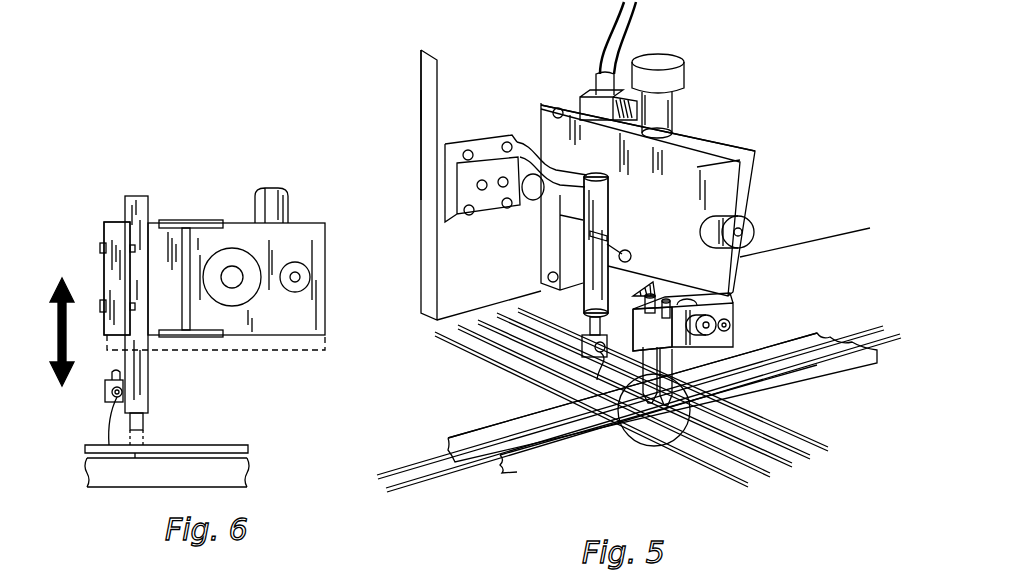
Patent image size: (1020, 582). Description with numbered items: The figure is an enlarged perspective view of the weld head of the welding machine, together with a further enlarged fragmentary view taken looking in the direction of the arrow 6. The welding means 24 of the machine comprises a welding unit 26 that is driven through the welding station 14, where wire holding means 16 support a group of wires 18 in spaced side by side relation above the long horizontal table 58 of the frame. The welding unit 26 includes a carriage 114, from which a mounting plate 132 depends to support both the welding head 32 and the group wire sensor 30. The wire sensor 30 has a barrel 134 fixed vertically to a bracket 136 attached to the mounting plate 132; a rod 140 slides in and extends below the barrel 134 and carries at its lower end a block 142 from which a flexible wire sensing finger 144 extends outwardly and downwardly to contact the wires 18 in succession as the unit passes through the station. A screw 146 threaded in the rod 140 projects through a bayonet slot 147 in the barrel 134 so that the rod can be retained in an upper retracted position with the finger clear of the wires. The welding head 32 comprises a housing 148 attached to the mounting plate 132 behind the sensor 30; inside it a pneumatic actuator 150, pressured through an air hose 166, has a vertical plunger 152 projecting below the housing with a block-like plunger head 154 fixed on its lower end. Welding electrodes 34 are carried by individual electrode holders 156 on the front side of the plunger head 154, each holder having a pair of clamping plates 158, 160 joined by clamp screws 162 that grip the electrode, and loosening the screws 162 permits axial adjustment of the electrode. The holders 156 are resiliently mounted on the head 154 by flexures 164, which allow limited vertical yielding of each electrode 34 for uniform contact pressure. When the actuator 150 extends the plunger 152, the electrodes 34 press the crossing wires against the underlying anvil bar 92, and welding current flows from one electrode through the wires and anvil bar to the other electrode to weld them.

In FIG. 5, the arrow 6 is at (722, 366).
In FIG. 5, the welding station 14 is at (744, 318).
In FIG. 5, the wire holding means 16 is at (416, 480).
In FIG. 5, the group wires 18 is at (735, 482).
In FIG. 5, the welding means 24 is at (413, 60).
In FIG. 5, the welding unit 26 is at (517, 84).
In FIG. 5, the group wire sensor 30 is at (574, 252).
In FIG. 5, the welding head 32 is at (744, 110).
In FIG. 6, the welding electrodes 34 is at (147, 402).
In FIG. 5, the welding electrodes 34 is at (628, 443).
In FIG. 5, the table 58 is at (846, 234).
In FIG. 6, the anvil bar 92 is at (248, 470).
In FIG. 5, the anvil bar 92 is at (548, 460).
In FIG. 5, the carriage 114 is at (455, 240).
In FIG. 5, the mounting plate 132 is at (421, 103).
In FIG. 5, the barrel 134 is at (609, 200).
In FIG. 5, the bracket 136 is at (528, 143).
In FIG. 5, the rod 140 is at (590, 325).
In FIG. 5, the block 142 is at (582, 340).
In FIG. 6, the wire sensing finger 144 is at (108, 430).
In FIG. 5, the wire sensing finger 144 is at (592, 372).
In FIG. 5, the screw 146 is at (629, 254).
In FIG. 5, the bayonet slot 147 is at (609, 234).
In FIG. 5, the housing 148 is at (747, 147).
In FIG. 5, the pneumatic actuator 150 is at (684, 114).
In FIG. 6, the plunger 152 is at (276, 190).
In FIG. 5, the plunger 152 is at (720, 295).
In FIG. 6, the plunger head 154 is at (314, 223).
In FIG. 5, the plunger head 154 is at (733, 335).
In FIG. 6, the electrode holders 156 is at (98, 267).
In FIG. 5, the electrode holders 156 is at (647, 338).
In FIG. 6, the clamping plate 158 is at (113, 222).
In FIG. 6, the clamping plate 160 is at (148, 223).
In FIG. 6, the clamp screws 162 is at (100, 245).
In FIG. 6, the flexures 164 is at (212, 220).
In FIG. 5, the air hose 166 is at (633, 7).